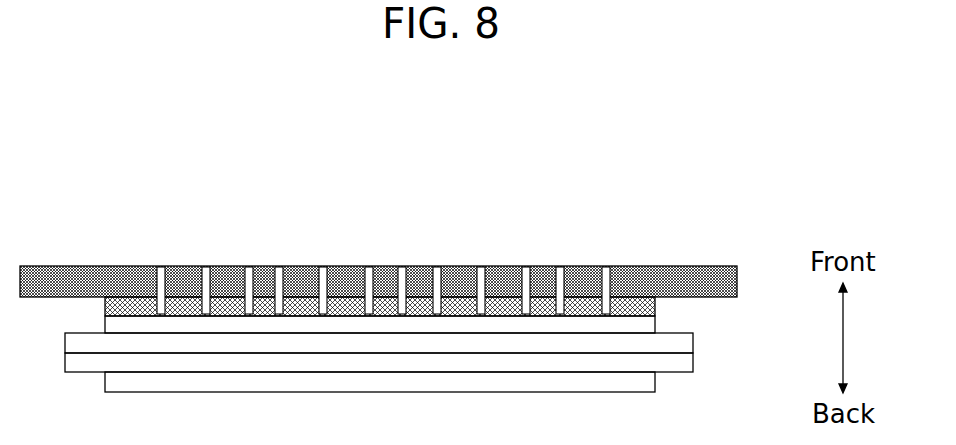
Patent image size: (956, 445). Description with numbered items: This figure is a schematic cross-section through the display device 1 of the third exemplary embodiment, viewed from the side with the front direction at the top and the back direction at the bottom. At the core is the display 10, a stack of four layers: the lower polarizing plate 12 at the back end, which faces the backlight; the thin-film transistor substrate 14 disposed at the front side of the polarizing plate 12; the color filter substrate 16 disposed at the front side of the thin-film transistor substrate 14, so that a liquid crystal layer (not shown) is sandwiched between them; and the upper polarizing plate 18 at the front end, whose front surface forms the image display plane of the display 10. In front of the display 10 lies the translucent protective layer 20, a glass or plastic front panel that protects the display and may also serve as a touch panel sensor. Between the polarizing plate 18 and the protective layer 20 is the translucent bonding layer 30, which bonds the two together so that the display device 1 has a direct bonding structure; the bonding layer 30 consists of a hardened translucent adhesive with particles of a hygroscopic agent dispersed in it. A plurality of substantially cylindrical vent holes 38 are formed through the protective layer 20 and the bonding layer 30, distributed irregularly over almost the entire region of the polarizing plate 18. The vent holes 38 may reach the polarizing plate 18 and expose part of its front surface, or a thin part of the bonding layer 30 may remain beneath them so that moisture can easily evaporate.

The display device 1 is at (415, 296).
The display 10 is at (430, 360).
The polarizing plate 12 is at (429, 392).
The thin-film transistor substrate 14 is at (693, 362).
The color filter substrate 16 is at (693, 343).
The polarizing plate 18 is at (655, 323).
The protective layer 20 is at (66, 266).
The bonding layer 30 is at (96, 311).
The vent holes 38 is at (368, 266).